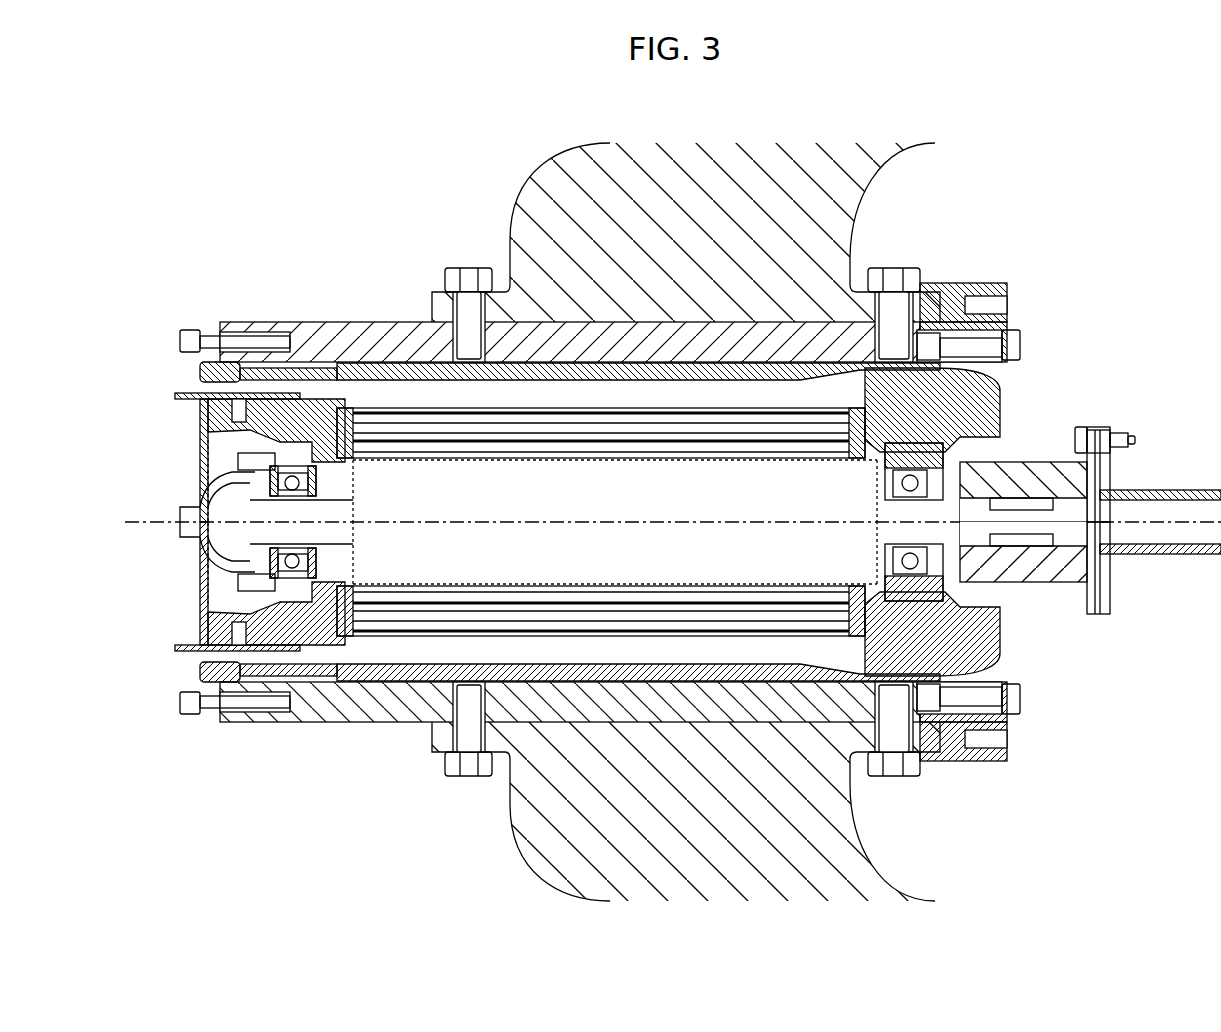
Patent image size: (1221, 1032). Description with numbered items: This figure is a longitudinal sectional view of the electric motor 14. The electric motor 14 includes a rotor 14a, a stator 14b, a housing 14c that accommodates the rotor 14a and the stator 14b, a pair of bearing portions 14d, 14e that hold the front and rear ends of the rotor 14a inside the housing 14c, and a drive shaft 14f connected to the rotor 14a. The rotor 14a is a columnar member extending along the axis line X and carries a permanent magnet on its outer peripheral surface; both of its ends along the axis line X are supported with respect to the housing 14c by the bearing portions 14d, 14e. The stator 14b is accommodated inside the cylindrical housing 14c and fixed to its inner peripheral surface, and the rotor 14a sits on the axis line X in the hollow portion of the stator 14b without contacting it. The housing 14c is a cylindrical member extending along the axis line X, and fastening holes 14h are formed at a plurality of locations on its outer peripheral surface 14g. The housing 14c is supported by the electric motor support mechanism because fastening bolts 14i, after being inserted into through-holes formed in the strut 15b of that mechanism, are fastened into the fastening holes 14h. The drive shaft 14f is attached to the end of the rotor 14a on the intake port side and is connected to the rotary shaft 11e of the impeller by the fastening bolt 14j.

The electric motor 14 is at (203, 226).
The rotor 14a is at (385, 640).
The stator 14b is at (380, 340).
The housing 14c is at (312, 722).
The bearing portion 14d is at (338, 462).
The bearing portion 14e is at (885, 458).
The drive shaft 14f is at (1040, 462).
The outer peripheral surface 14g is at (320, 322).
The fastening holes 14h is at (482, 352).
The fastening bolts 14i is at (470, 268).
The fastening bolt 14j is at (1082, 428).
The strut 15b is at (565, 185).
The rotary shaft 11e is at (1160, 490).
The axis line X is at (148, 520).